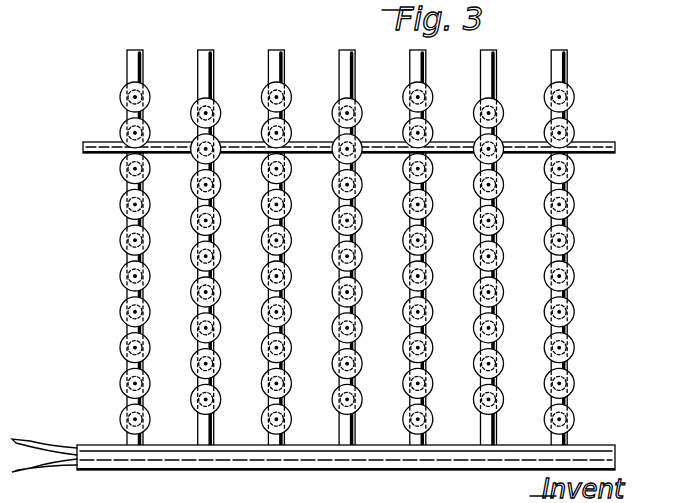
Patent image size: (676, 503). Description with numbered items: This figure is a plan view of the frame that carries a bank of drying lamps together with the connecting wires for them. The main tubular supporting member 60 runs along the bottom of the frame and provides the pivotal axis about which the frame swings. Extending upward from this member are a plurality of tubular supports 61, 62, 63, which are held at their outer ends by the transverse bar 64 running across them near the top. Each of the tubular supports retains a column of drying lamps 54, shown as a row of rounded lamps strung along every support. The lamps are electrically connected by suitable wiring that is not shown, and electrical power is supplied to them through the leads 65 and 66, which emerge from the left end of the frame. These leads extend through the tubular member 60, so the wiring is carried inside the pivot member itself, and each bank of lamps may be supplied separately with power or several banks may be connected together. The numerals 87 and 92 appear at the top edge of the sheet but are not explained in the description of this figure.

The drying lamps 54 is at (118, 176).
The main tubular supporting member 60 is at (580, 450).
The tubular support 61 is at (570, 76).
The tubular support 62 is at (497, 78).
The tubular support 63 is at (424, 73).
The transverse bar 64 is at (595, 148).
The lead 65 is at (22, 444).
The lead 66 is at (35, 462).
The reference numeral 87 is at (129, 11).
The reference numeral 92 is at (189, 10).